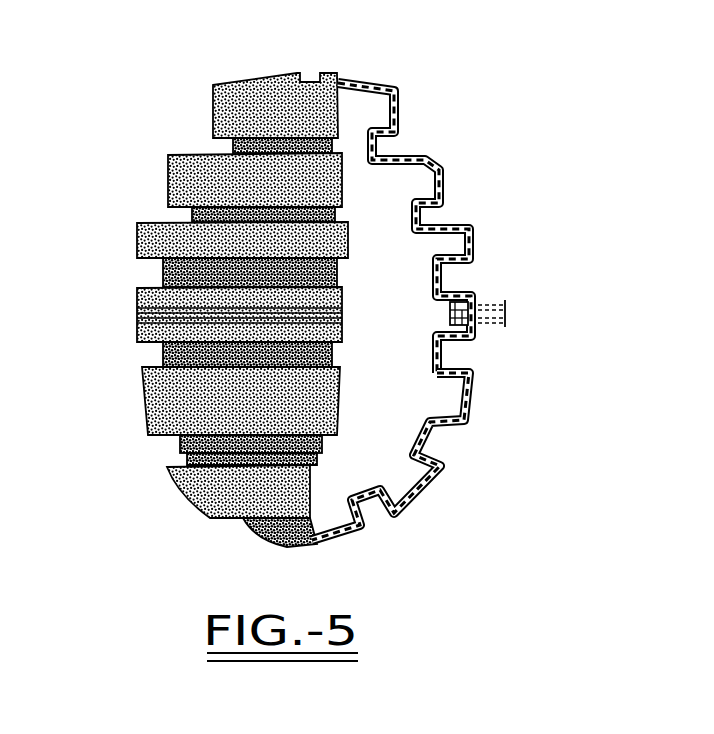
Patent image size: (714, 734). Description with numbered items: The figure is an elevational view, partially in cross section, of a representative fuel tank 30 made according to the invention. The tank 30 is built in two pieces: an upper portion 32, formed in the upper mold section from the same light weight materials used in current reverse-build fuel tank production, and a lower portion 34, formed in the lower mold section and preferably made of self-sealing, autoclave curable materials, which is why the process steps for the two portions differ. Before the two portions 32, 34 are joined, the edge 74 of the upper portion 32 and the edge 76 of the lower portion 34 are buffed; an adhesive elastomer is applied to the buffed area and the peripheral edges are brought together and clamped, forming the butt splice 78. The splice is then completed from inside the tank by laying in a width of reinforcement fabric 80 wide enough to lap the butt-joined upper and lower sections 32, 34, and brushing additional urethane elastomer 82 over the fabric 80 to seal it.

The fuel tank 30 is at (178, 487).
The upper portion 32 is at (388, 83).
The lower portion 34 is at (357, 537).
The edge of upper portion 74 is at (163, 319).
The edge of lower portion 76 is at (138, 312).
The butt splice 78 is at (490, 302).
The reinforcement fabric 80 is at (450, 310).
The urethane elastomer 82 is at (450, 322).